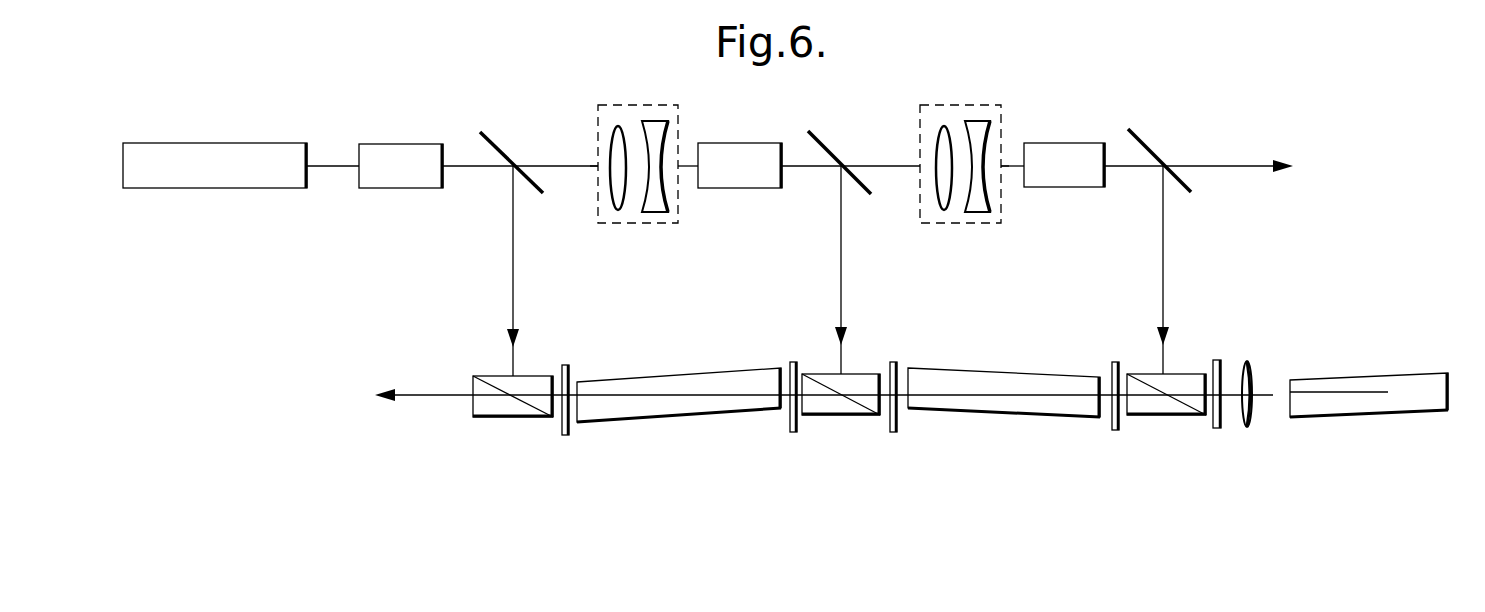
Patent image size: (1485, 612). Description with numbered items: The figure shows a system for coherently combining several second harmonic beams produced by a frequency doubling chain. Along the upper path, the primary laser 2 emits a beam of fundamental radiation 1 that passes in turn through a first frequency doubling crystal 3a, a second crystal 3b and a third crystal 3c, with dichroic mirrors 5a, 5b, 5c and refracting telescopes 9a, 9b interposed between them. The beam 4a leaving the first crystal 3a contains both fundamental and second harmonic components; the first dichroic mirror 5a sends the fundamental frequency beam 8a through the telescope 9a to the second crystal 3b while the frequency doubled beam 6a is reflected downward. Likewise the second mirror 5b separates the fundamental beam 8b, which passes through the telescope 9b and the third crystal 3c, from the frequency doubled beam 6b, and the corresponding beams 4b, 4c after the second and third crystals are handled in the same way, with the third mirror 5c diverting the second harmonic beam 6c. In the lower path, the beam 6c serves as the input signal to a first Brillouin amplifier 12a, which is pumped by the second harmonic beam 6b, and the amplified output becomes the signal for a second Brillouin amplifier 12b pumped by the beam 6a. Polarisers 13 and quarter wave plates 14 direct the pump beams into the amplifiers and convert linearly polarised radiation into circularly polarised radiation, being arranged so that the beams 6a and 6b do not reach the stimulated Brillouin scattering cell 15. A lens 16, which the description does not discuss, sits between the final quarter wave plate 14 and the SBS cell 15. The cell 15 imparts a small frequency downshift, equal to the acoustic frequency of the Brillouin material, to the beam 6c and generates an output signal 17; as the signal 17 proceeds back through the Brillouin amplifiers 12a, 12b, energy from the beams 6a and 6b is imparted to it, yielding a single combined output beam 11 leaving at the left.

The beam of fundamental radiation 1 is at (330, 178).
The primary laser 2 is at (230, 146).
The first frequency doubling crystal 3a is at (387, 152).
The second frequency doubling crystal 3b is at (725, 152).
The third frequency doubling crystal 3c is at (1042, 152).
The beam of radiation transmitted by the first crystal 4a is at (469, 178).
The beam 4b is at (807, 178).
The beam 4c is at (1120, 178).
The first dichroic mirror 5a is at (494, 143).
The second dichroic mirror 5b is at (820, 140).
The third dichroic mirror 5c is at (1142, 140).
The first frequency doubled beam 6a is at (525, 302).
The second frequency doubled beam 6b is at (853, 301).
The third second harmonic beam 6c is at (1175, 301).
The fundamental frequency beam 8a is at (564, 178).
The fundamental frequency beam 8b is at (892, 178).
The refracting telescope 9a is at (657, 222).
The refracting telescope 9b is at (980, 222).
The single combined output beam 11 is at (420, 407).
The first Brillouin amplifier 12a is at (1003, 410).
The second Brillouin amplifier 12b is at (675, 410).
The polariser 13 is at (514, 420).
The quarter wave plate 14 is at (566, 437).
The stimulated Brillouin scattering cell 15 is at (1413, 400).
The lens 16 is at (1250, 368).
The output signal 17 is at (1273, 397).